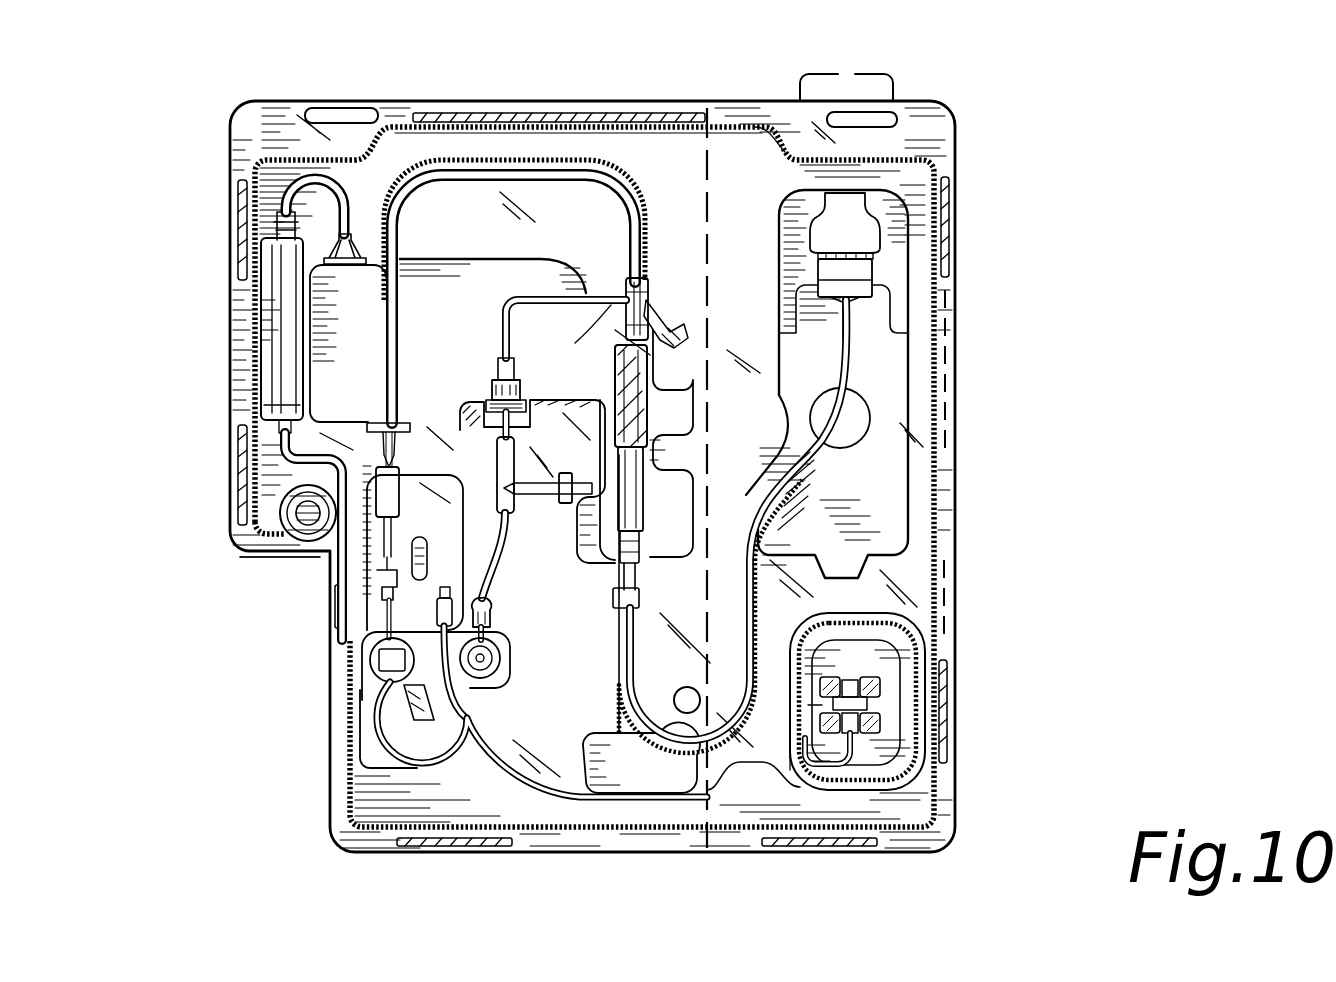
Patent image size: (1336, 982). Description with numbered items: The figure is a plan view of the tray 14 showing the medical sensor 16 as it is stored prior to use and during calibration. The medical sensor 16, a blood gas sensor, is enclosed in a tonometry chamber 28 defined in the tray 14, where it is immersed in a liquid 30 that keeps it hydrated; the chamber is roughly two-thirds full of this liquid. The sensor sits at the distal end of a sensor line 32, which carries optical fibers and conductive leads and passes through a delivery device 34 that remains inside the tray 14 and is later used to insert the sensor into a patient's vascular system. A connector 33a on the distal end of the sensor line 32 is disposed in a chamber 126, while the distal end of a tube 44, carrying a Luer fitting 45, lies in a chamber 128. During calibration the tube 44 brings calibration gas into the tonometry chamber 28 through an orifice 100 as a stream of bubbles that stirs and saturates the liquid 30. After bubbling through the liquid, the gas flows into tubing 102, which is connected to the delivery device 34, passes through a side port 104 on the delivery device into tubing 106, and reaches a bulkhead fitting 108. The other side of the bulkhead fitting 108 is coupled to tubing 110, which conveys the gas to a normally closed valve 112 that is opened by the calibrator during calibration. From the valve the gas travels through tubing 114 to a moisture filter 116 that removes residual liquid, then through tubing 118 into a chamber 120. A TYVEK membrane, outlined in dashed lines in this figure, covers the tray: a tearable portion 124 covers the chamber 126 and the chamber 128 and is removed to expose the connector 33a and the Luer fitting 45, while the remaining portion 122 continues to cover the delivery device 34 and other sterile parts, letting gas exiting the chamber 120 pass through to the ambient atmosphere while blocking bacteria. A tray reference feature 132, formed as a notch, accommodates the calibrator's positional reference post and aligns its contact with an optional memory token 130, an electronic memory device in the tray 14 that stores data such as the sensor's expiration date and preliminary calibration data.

The tray 14 is at (207, 115).
The medical sensor 16 is at (388, 582).
The tonometry chamber 28 is at (383, 548).
The liquid 30 is at (372, 652).
The sensor line 32 is at (850, 422).
The connector 33a is at (858, 235).
The delivery device 34 is at (640, 555).
The tube 44 is at (897, 780).
The Luer fitting 45 is at (855, 675).
The orifice 100 is at (492, 610).
The tubing 102 is at (399, 320).
The side port 104 is at (606, 302).
The tubing 106 is at (543, 296).
The bulkhead fitting 108 is at (496, 398).
The tubing 110 is at (513, 566).
The normally closed valve 112 is at (500, 658).
The tubing 114 is at (423, 760).
The moisture filter 116 is at (290, 383).
The tubing 118 is at (276, 192).
The chamber 120 is at (365, 302).
The remaining portion of membrane 122 is at (548, 92).
The membrane portion 124 is at (762, 96).
The chamber 126 is at (878, 328).
The chamber 128 is at (880, 755).
The memory token 130 is at (283, 543).
The tray reference feature 132 is at (280, 497).